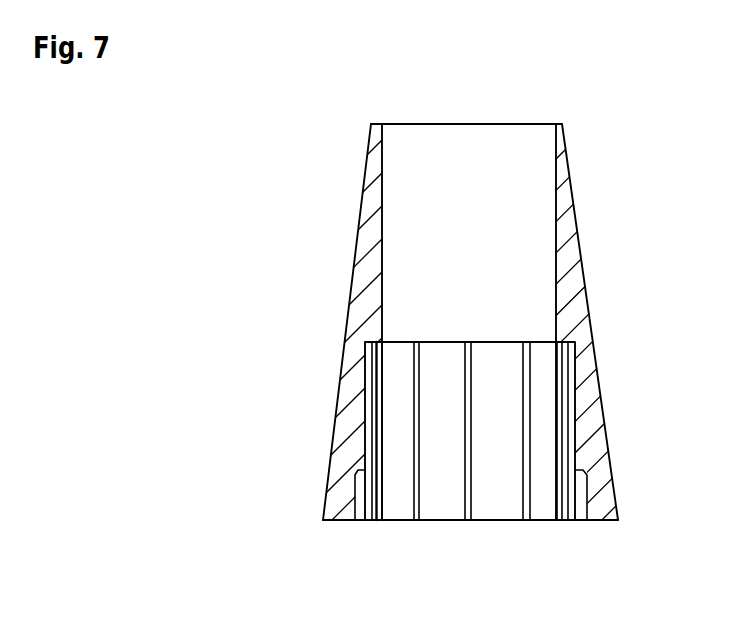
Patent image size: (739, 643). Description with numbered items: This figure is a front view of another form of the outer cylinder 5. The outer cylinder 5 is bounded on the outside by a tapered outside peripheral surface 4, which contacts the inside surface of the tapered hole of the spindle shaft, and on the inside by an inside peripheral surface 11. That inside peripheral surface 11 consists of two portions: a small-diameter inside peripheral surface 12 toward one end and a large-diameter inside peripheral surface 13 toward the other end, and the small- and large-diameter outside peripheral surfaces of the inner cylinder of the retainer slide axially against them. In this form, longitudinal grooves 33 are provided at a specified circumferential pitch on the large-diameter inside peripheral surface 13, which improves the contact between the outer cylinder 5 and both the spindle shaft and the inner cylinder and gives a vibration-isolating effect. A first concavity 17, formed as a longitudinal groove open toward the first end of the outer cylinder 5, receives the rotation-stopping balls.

The tapered outside peripheral surface 4 is at (370, 322).
The outer cylinder 5 is at (370, 357).
The inside peripheral surface 11 is at (546, 262).
The small-diameter inside peripheral surface 12 is at (553, 176).
The large-diameter inside peripheral surface 13 is at (472, 435).
The first concavity 17 is at (358, 498).
The longitudinal grooves 33 is at (523, 367).